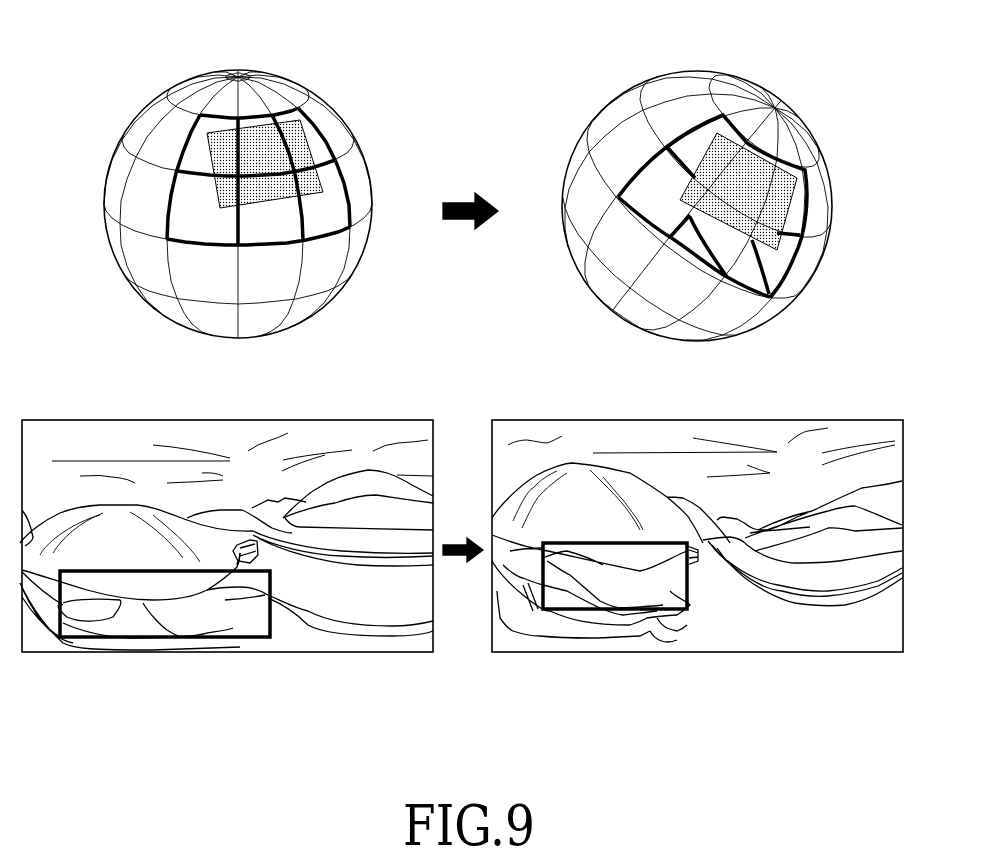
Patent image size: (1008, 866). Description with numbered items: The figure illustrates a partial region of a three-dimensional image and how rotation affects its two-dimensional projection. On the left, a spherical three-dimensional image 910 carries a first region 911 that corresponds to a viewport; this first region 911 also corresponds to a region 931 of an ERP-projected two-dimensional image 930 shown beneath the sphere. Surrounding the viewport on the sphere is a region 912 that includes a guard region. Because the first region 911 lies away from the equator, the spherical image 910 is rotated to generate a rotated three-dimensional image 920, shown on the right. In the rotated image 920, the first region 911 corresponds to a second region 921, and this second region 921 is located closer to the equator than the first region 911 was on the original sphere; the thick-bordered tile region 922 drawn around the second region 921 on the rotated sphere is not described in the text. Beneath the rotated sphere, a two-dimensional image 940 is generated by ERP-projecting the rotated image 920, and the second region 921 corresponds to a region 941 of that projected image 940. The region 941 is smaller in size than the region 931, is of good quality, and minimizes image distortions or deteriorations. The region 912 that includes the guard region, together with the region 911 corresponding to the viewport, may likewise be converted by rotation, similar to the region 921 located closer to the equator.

The spherical 3D image 910 is at (128, 93).
The first region 911 is at (308, 133).
The region including a guard region 912 is at (330, 175).
The rotated 3D image 920 is at (758, 58).
The second region 921 is at (722, 157).
The tile of rotated spherical image 922 is at (662, 180).
The ERP-projected 2D image 930 is at (92, 398).
The region of ERP-projected 2D image 931 is at (160, 638).
The 2D image generated by ERP-projecting the rotated 3D image 940 is at (797, 400).
The region of 2D image 941 is at (630, 610).